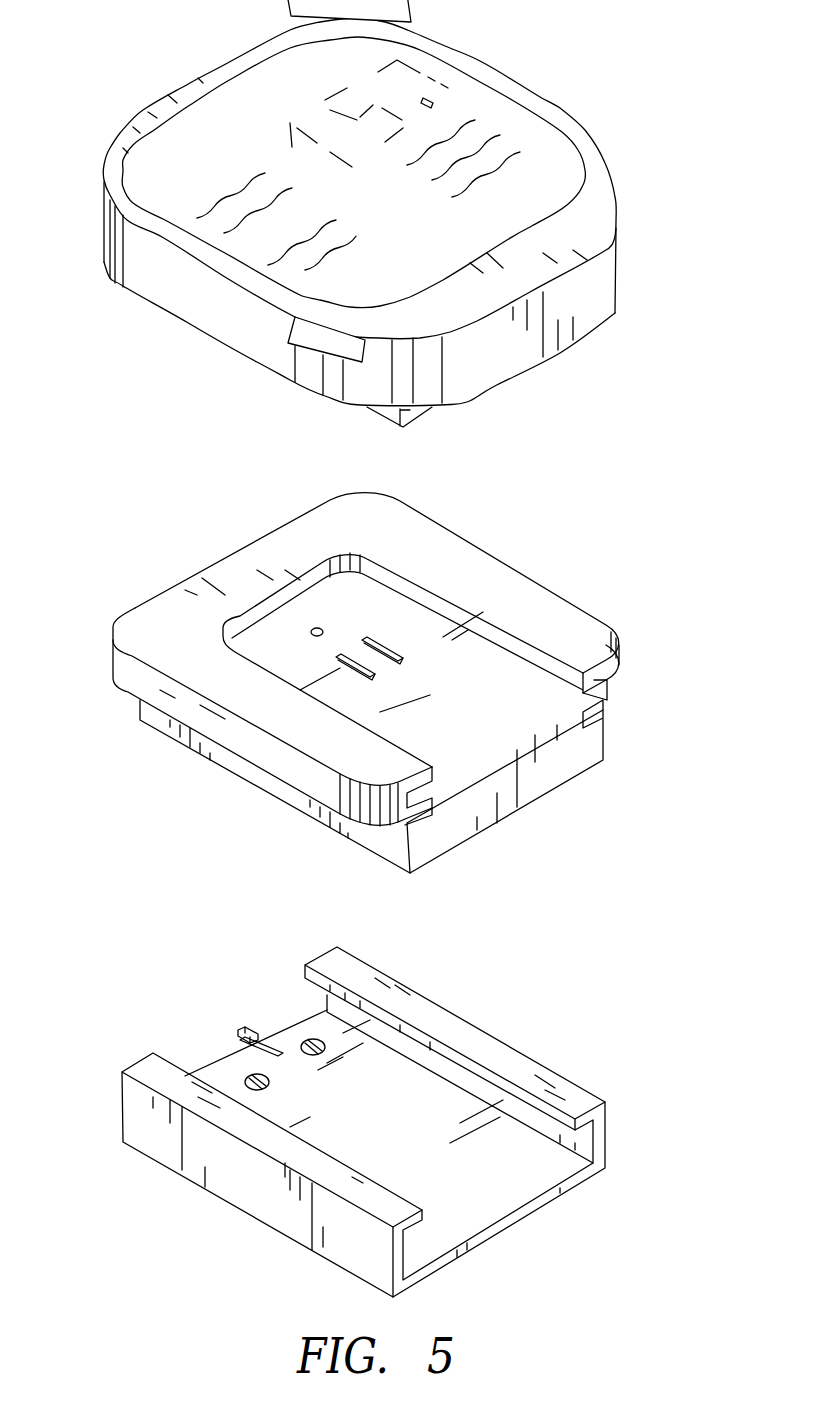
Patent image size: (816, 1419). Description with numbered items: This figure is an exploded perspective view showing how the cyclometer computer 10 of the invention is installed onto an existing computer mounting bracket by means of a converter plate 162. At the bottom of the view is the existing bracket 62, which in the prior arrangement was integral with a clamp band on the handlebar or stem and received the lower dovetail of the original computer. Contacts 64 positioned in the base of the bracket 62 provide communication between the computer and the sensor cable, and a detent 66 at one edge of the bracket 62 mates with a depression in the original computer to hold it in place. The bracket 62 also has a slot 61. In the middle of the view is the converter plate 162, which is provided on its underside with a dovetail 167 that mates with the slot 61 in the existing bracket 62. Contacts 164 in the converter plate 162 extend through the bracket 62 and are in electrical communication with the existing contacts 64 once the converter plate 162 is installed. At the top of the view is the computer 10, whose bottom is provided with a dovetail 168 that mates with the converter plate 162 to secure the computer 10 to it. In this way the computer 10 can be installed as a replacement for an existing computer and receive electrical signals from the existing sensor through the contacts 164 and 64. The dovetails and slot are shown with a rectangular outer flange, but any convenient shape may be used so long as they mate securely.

The computer 10 is at (600, 206).
The dovetail 168 is at (413, 418).
The converter plate 162 is at (585, 625).
The contacts 164 is at (367, 637).
The dovetail 167 is at (542, 788).
The slot 61 is at (540, 1183).
The bracket 62 is at (527, 1070).
The contacts 64 is at (253, 1075).
The detent 66 is at (257, 1030).